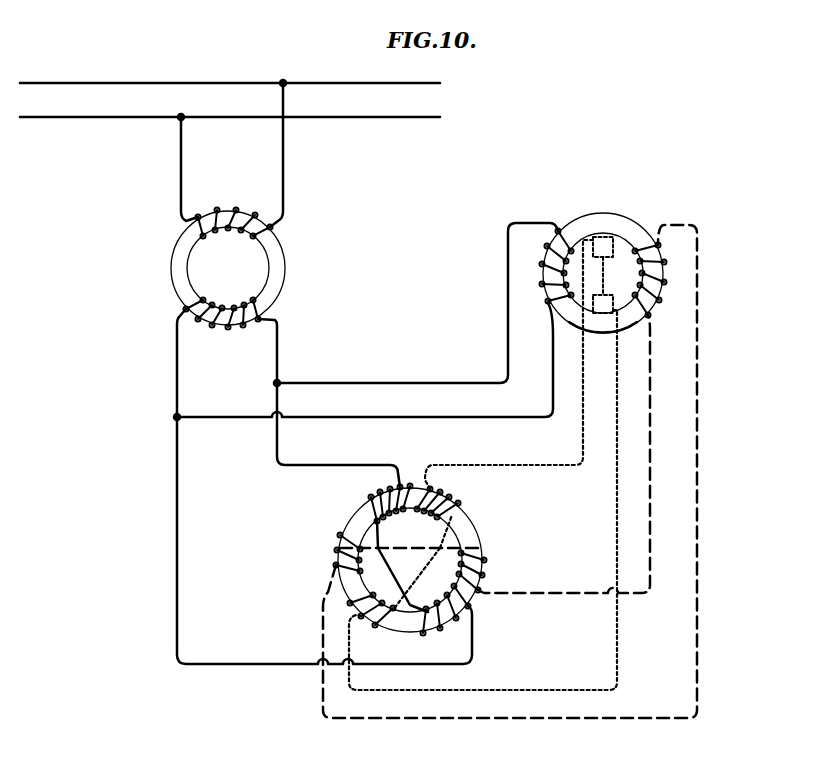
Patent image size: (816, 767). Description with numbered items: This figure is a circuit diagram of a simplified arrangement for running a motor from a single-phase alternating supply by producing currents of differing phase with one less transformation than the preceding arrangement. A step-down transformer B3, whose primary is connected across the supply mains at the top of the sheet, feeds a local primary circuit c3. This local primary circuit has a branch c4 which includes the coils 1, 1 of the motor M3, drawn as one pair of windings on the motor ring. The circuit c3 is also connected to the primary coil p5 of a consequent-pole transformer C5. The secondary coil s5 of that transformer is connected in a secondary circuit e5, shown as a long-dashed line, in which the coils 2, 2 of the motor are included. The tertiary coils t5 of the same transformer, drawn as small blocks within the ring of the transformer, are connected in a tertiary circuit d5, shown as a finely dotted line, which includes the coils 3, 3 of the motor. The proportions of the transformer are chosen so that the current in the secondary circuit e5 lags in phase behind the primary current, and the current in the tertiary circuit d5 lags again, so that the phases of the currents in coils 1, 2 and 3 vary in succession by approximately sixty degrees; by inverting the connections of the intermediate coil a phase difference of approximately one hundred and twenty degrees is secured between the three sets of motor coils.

The step-down transformer B3 is at (228, 205).
The consequent-pole transformer C5 is at (604, 254).
The primary coil p5 is at (546, 266).
The secondary coil s5 is at (661, 280).
The tertiary coils t5 is at (618, 262).
The circuit c3 is at (377, 387).
The branch c4 is at (323, 467).
The tertiary circuit d5 is at (483, 465).
The secondary circuit e5 is at (510, 471).
The motor M3 is at (410, 564).
The coils of the motor 1 is at (415, 566).
The coils of the motor 2 is at (406, 563).
The coils of the motor 3 is at (404, 564).